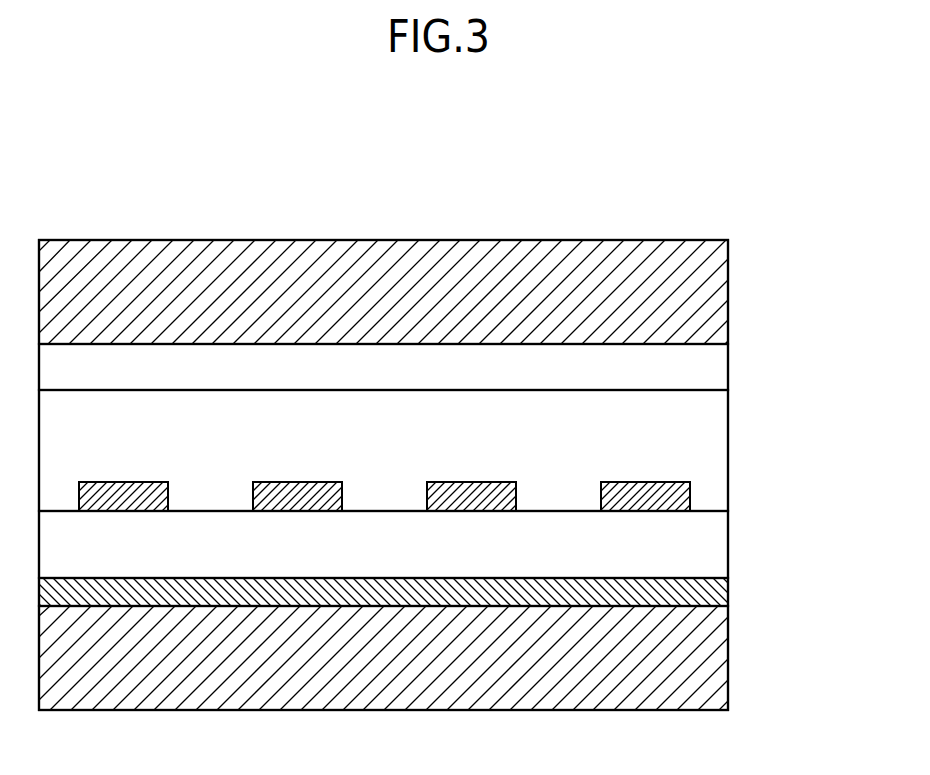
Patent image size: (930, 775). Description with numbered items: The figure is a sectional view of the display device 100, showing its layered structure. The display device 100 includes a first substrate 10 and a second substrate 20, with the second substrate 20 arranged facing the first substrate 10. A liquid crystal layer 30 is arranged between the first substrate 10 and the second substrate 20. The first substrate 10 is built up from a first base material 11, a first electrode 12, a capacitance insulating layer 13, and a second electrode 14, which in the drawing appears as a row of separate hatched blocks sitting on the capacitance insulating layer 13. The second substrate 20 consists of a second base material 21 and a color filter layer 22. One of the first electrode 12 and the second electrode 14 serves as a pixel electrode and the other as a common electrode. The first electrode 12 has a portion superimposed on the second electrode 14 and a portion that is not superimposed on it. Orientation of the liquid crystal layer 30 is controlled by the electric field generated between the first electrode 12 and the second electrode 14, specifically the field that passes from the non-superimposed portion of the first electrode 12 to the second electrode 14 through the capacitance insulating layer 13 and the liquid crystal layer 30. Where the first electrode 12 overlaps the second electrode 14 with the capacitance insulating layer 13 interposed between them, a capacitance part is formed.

The display device 100 is at (731, 184).
The first substrate 10 is at (442, 596).
The first base material 11 is at (405, 658).
The first electrode 12 is at (718, 593).
The capacitance insulating layer 13 is at (718, 558).
The second electrode 14 is at (677, 497).
The second substrate 20 is at (427, 315).
The second base material 21 is at (718, 304).
The color filter layer 22 is at (405, 367).
The liquid crystal layer 30 is at (718, 447).